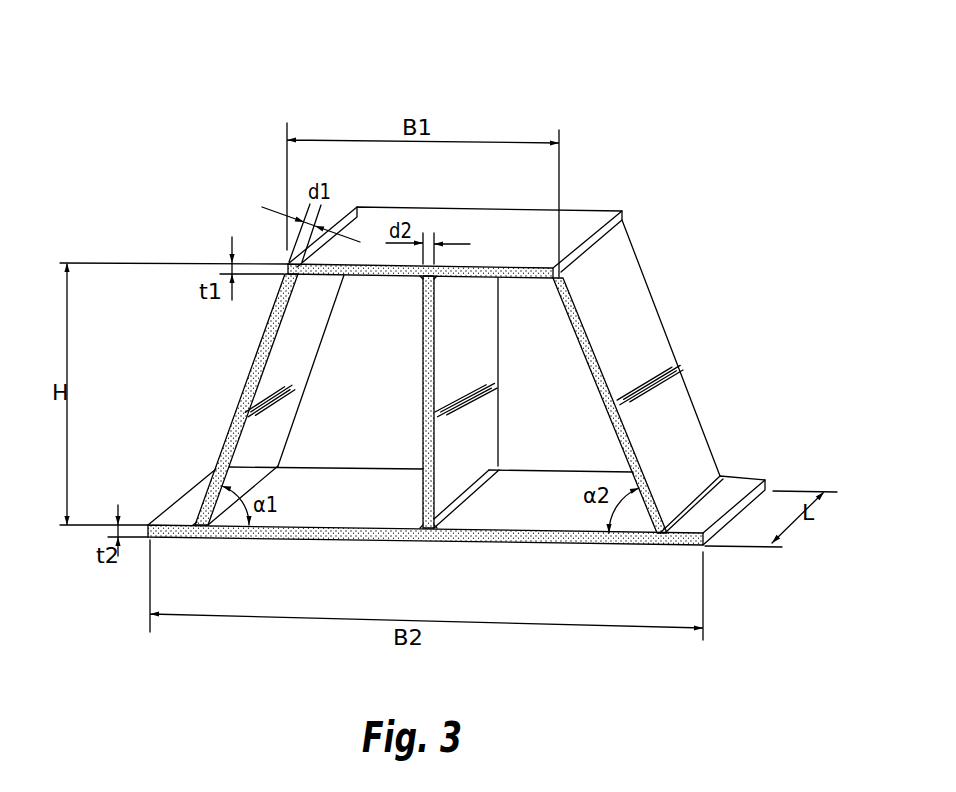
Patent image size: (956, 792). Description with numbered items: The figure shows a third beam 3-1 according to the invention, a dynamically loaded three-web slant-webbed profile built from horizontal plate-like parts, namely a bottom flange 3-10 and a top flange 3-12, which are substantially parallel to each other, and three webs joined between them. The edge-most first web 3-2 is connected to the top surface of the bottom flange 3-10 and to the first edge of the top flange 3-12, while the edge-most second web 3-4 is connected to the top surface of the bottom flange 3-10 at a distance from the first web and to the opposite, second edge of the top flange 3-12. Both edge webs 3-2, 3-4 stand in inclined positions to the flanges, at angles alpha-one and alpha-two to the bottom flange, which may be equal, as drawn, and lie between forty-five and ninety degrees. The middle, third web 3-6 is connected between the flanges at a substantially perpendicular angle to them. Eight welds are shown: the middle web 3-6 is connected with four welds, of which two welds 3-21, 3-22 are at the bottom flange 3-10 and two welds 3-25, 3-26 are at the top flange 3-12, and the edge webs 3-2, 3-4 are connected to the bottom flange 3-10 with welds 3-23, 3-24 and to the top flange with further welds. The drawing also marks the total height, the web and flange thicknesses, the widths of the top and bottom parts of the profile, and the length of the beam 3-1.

The support structure / hollow profile assembly 3-1 is at (185, 99).
The first web 3-2 is at (240, 398).
The second web 3-4 is at (632, 304).
The third web 3-6 is at (491, 358).
The bottom plate 3-10 is at (578, 522).
The top flange 3-12 is at (577, 223).
The weld 3-21 is at (452, 518).
The weld 3-22 is at (418, 520).
The weld 3-23 is at (705, 496).
The weld 3-24 is at (195, 521).
The weld 3-25 is at (435, 278).
The weld 3-26 is at (421, 278).